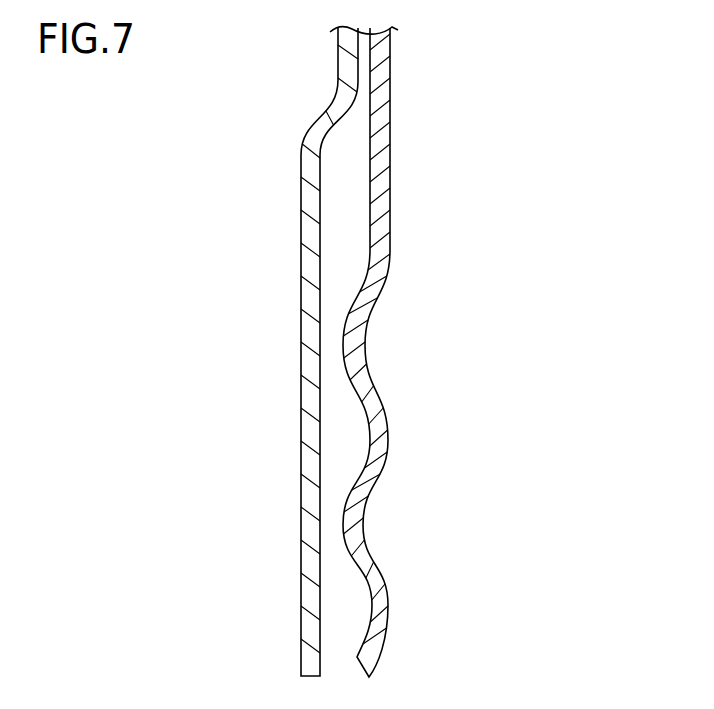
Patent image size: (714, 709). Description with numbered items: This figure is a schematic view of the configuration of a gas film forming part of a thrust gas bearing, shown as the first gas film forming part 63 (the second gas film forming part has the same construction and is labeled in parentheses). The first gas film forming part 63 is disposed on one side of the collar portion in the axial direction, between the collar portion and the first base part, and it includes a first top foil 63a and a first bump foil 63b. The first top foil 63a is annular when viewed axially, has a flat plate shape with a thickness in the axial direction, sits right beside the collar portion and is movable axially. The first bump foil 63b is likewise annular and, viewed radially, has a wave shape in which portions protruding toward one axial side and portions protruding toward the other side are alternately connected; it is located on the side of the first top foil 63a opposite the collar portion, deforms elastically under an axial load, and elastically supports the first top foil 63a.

The first gas film forming part 63 is at (484, 88).
The first top foil 63a is at (308, 218).
The first bump foil 63b is at (388, 168).